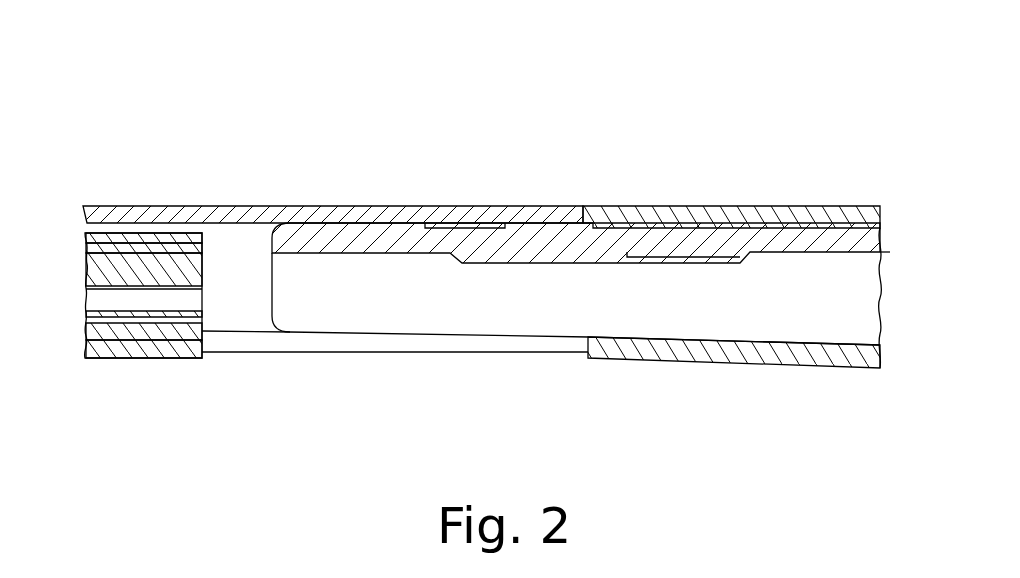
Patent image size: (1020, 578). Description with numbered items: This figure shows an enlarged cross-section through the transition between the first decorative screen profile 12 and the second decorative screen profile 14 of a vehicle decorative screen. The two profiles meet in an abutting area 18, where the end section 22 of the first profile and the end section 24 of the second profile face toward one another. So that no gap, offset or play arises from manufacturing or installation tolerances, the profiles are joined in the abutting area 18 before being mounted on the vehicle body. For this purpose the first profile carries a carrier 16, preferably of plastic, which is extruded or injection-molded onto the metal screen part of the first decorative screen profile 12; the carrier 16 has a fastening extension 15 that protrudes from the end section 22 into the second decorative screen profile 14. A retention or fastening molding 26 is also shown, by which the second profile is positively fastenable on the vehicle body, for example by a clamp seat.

The first decorative screen profile 12 is at (670, 216).
The second decorative screen profile 14 is at (140, 220).
The fastening extension 15 is at (352, 242).
The carrier 16 is at (843, 326).
The abutting area 18 is at (544, 184).
The end section 22 is at (680, 345).
The end section 24 is at (527, 342).
The retention or fastening molding 26 is at (135, 342).